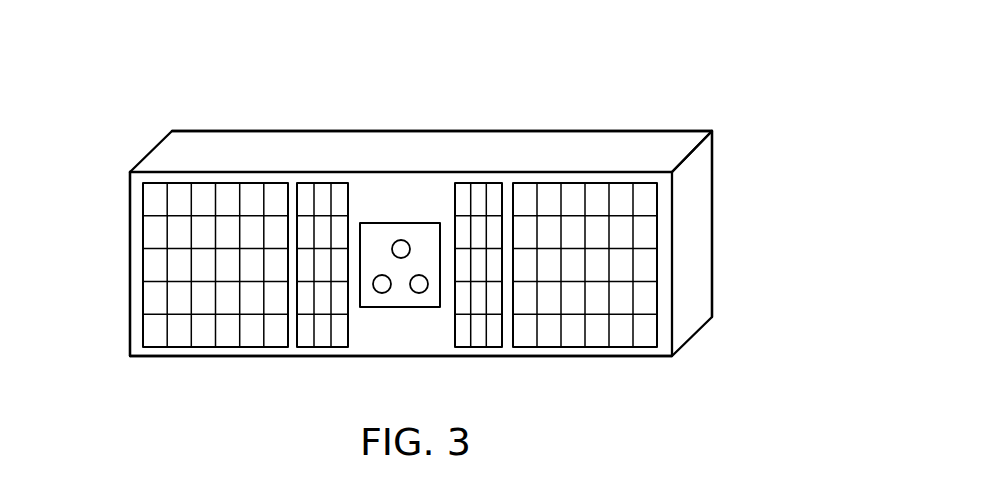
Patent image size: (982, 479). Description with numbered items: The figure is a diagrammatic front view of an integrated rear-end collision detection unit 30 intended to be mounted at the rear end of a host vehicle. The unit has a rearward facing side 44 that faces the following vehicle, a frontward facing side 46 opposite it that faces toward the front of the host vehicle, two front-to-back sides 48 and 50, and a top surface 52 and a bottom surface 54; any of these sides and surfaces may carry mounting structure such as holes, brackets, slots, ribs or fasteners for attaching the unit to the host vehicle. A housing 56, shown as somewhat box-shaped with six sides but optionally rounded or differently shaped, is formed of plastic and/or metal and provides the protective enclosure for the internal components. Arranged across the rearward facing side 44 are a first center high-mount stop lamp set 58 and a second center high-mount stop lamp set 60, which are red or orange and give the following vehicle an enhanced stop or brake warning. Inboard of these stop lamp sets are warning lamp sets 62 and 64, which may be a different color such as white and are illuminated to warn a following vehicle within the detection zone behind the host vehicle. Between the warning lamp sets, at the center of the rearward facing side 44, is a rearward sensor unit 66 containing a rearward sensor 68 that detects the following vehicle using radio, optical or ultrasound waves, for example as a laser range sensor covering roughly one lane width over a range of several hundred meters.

The integrated rear-end collision detection unit 30 is at (697, 87).
The rearward facing side 44 is at (399, 333).
The frontward facing side 46 is at (713, 203).
The front-to-back side 48 is at (130, 277).
The front-to-back side 50 is at (697, 285).
The top surface 52 is at (238, 143).
The bottom surface 54 is at (528, 360).
The housing 56 is at (567, 138).
The first center high-mount stop lamp set 58 is at (202, 333).
The second center high-mount stop lamp set 60 is at (596, 337).
The warning lamp set 62 is at (323, 223).
The warning lamp set 64 is at (476, 191).
The rearward sensor unit 66 is at (413, 222).
The rearward sensor 68 is at (395, 241).